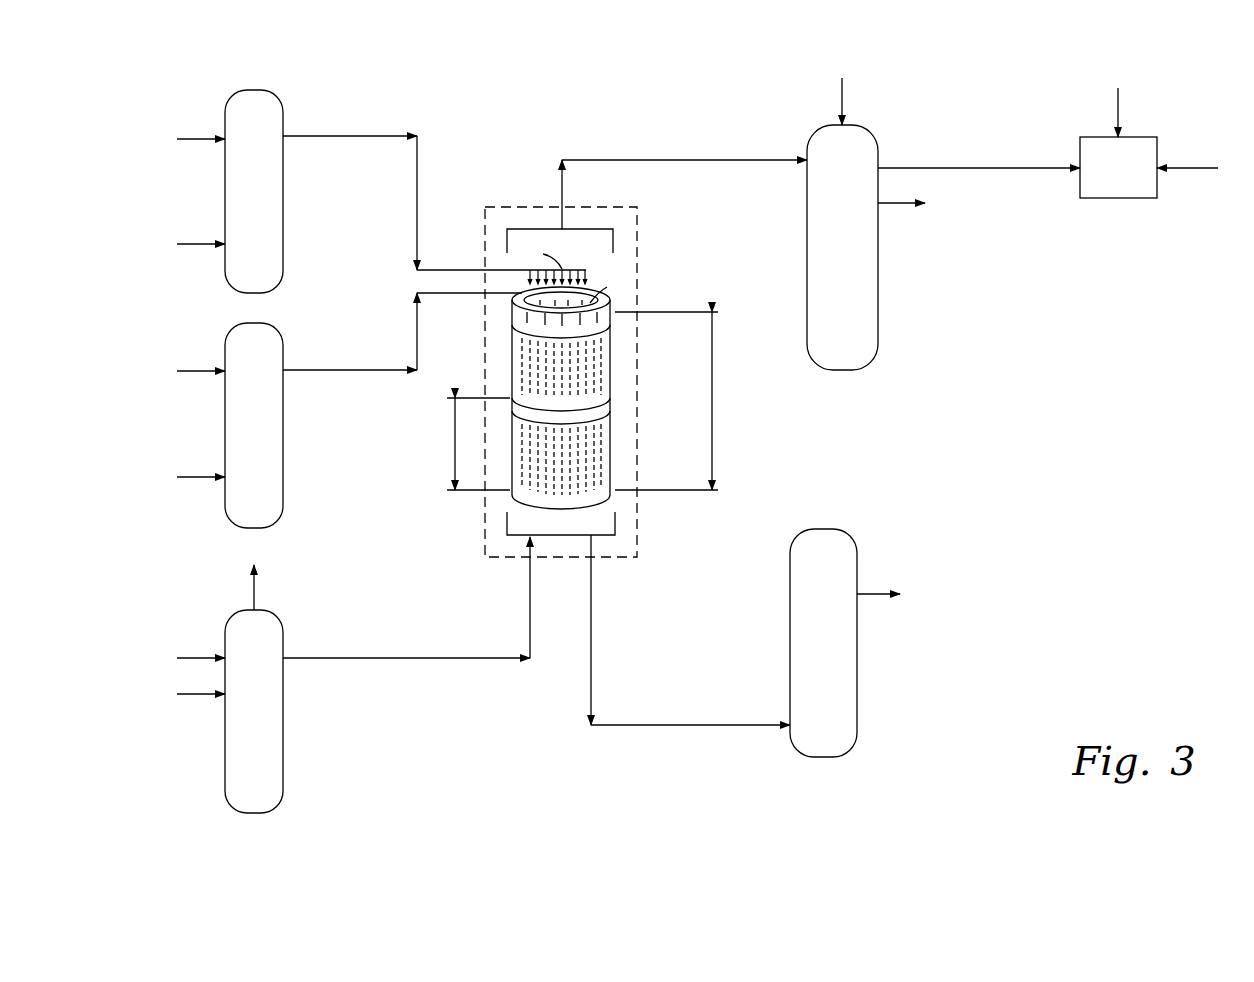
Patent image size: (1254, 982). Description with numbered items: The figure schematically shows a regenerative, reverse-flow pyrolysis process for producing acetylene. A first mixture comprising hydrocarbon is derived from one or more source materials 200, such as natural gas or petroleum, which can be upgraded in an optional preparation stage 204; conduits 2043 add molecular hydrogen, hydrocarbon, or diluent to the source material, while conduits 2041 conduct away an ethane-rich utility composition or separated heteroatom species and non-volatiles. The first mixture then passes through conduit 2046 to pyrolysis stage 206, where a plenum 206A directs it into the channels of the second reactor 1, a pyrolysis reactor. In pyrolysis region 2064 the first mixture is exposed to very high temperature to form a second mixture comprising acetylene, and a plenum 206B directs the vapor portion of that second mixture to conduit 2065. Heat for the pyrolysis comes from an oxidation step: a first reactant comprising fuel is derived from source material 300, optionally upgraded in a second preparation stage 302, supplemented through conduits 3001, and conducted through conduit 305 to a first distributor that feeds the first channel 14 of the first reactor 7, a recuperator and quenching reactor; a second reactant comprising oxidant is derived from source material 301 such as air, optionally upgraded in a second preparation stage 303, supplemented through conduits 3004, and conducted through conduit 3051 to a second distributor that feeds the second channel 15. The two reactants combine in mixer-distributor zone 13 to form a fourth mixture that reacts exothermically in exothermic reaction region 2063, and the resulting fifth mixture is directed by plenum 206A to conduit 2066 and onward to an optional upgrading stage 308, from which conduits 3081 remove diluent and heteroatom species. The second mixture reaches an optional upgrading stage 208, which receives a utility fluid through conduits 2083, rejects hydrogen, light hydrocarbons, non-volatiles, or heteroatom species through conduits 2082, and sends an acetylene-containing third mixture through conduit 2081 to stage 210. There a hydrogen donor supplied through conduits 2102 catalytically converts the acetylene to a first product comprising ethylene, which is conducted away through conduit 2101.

The second preparation stage 302 is at (233, 92).
The source material 300 is at (196, 138).
The conduits 3001 is at (196, 243).
The conduit 305 is at (320, 136).
The second preparation stage 303 is at (233, 325).
The conduits 3004 is at (196, 370).
The source material 301 is at (196, 476).
The conduit 3051 is at (320, 372).
The preparation stage 204 is at (233, 612).
The conduits 2041 is at (256, 590).
The source materials 200 is at (196, 657).
The conduits 2043 is at (196, 693).
The conduit 2046 is at (416, 657).
The pyrolysis stage 206 is at (584, 355).
The plenum 206A is at (507, 523).
The plenum 206B is at (523, 229).
The exothermic reaction region 2063 is at (455, 446).
The pyrolysis region 2064 is at (716, 404).
The conduit 2065 is at (652, 160).
The conduit 2066 is at (660, 724).
The second reactor 1 is at (608, 457).
The first channel 14 is at (592, 370).
The first reactor 7 is at (610, 373).
The second channel 15 is at (585, 395).
The mixer-distributor zone 13 is at (605, 405).
The upgrading stage 208 is at (870, 126).
The conduits 2083 is at (838, 88).
The conduit 2081 is at (896, 168).
The conduits 2082 is at (896, 203).
The stage 210 is at (1118, 198).
The conduits 2102 is at (1115, 100).
The conduit 2101 is at (1183, 168).
The upgrading stage 308 is at (868, 541).
The conduits 3081 is at (896, 605).